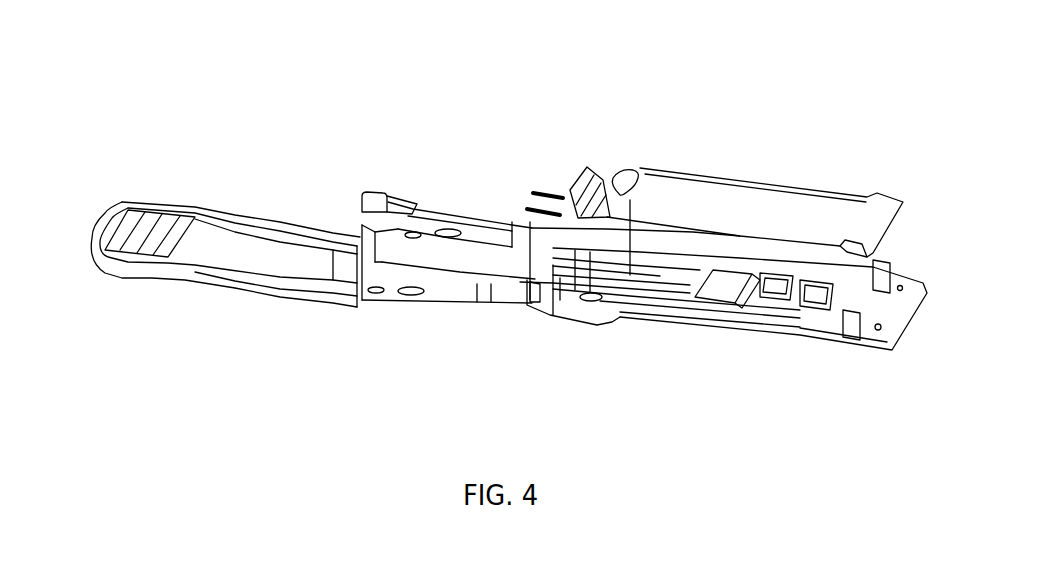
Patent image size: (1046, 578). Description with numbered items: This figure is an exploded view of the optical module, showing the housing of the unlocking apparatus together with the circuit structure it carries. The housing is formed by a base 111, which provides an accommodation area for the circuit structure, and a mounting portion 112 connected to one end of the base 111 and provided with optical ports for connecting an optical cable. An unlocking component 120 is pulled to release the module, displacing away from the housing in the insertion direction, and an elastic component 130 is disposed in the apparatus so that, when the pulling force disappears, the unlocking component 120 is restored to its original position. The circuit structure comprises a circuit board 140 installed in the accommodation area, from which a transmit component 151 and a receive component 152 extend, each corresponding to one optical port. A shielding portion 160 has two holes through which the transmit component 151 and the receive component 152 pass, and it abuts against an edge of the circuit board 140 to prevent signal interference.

The base 111 is at (713, 330).
The mounting portion 112 is at (560, 280).
The unlocking component 120 is at (372, 300).
The elastic component 130 is at (533, 188).
The circuit board 140 is at (670, 173).
The transmit component 151 is at (590, 185).
The receive component 152 is at (627, 192).
The shielding portion 160 is at (580, 188).